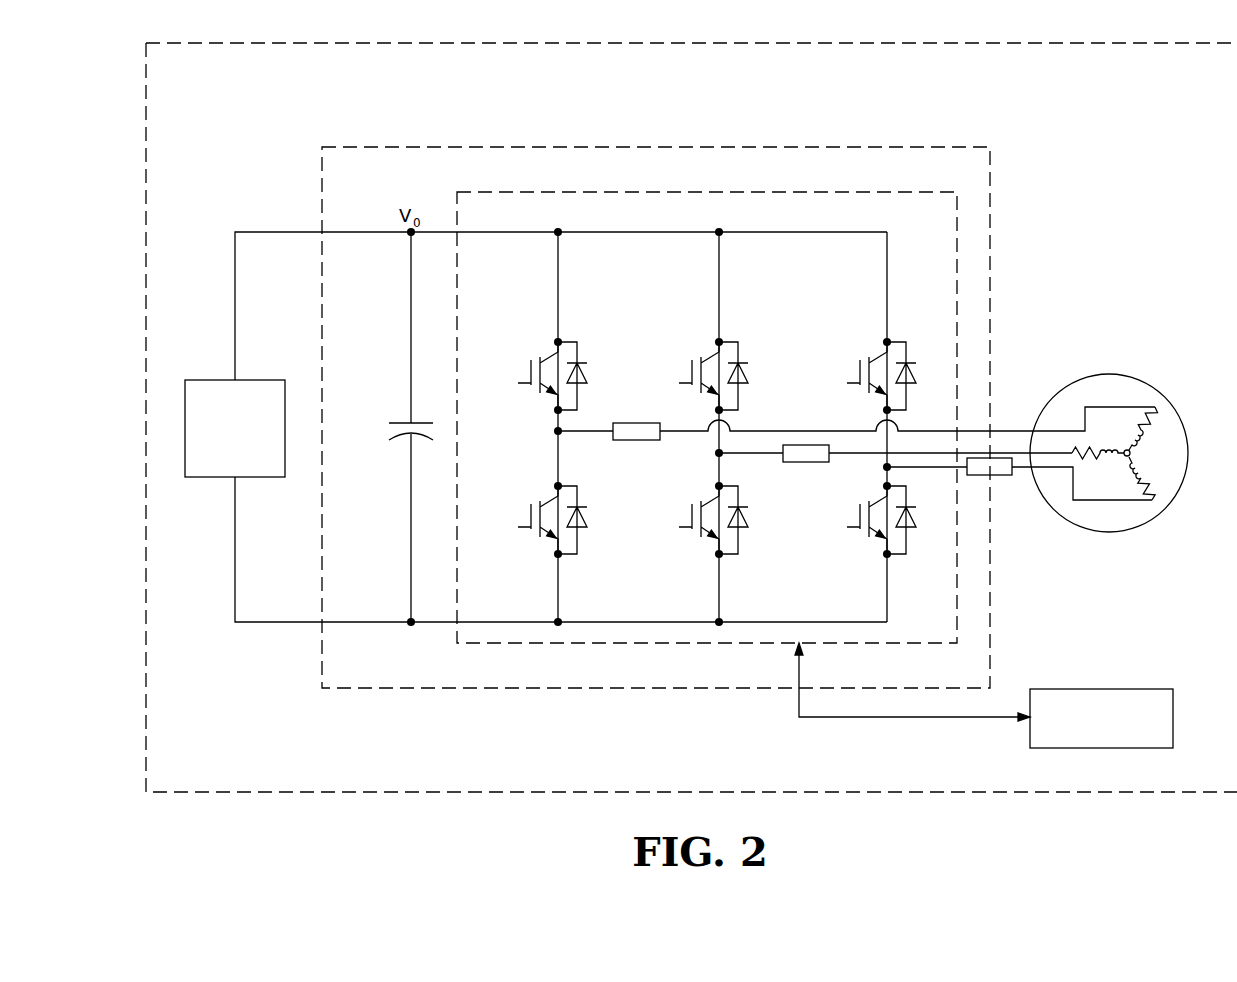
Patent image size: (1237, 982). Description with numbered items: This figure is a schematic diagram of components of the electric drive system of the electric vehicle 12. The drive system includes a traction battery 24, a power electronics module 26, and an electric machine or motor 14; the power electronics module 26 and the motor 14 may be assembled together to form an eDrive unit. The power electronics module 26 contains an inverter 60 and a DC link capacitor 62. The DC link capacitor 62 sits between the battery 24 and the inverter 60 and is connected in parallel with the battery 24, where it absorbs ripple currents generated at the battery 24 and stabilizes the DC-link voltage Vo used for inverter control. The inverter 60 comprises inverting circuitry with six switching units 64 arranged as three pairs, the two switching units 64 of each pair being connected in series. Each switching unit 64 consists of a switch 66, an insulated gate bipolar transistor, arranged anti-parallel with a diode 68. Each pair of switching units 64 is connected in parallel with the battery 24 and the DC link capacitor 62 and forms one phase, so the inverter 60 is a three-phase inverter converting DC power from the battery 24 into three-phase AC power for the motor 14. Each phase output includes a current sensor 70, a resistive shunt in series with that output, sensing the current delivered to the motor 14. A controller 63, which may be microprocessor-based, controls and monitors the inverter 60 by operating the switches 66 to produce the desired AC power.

The electric vehicle 12 is at (643, 43).
The electric machine 14 is at (1103, 375).
The traction battery 24 is at (536, 427).
The power electronics module 26 is at (643, 147).
The inverter 60 is at (643, 192).
The DC link capacitor 62 is at (404, 420).
The controller 63 is at (1082, 689).
The switching unit 64 is at (691, 434).
The switch 66 is at (675, 431).
The diode 68 is at (752, 461).
The current sensor 70 is at (621, 423).